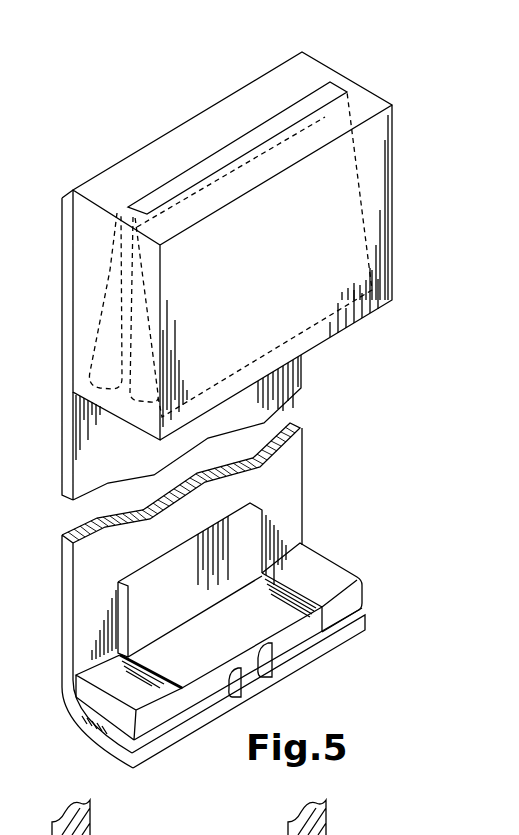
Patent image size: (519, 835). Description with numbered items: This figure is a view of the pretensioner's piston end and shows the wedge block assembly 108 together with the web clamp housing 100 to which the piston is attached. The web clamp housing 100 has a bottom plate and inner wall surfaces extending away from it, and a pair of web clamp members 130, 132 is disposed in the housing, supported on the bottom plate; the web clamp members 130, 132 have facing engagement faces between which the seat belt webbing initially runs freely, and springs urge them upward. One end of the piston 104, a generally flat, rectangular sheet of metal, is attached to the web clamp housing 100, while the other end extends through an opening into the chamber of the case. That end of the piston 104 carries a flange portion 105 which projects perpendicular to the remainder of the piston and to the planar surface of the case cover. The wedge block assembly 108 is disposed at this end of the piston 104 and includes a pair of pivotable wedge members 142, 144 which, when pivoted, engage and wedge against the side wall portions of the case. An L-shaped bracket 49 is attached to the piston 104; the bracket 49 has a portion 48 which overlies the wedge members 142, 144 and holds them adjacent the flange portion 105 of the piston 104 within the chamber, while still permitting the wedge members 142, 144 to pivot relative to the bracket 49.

The web clamp housing 100 is at (368, 172).
The piston 104 is at (0, 142).
The flange portion 105 is at (113, 752).
The wedge block assembly 108 is at (349, 529).
The web clamp member 130 is at (142, 353).
The web clamp member 132 is at (113, 328).
The wedge member 142 is at (105, 710).
The wedge member 144 is at (355, 600).
The portion 48 is at (190, 657).
The L-shaped bracket 49 is at (240, 550).